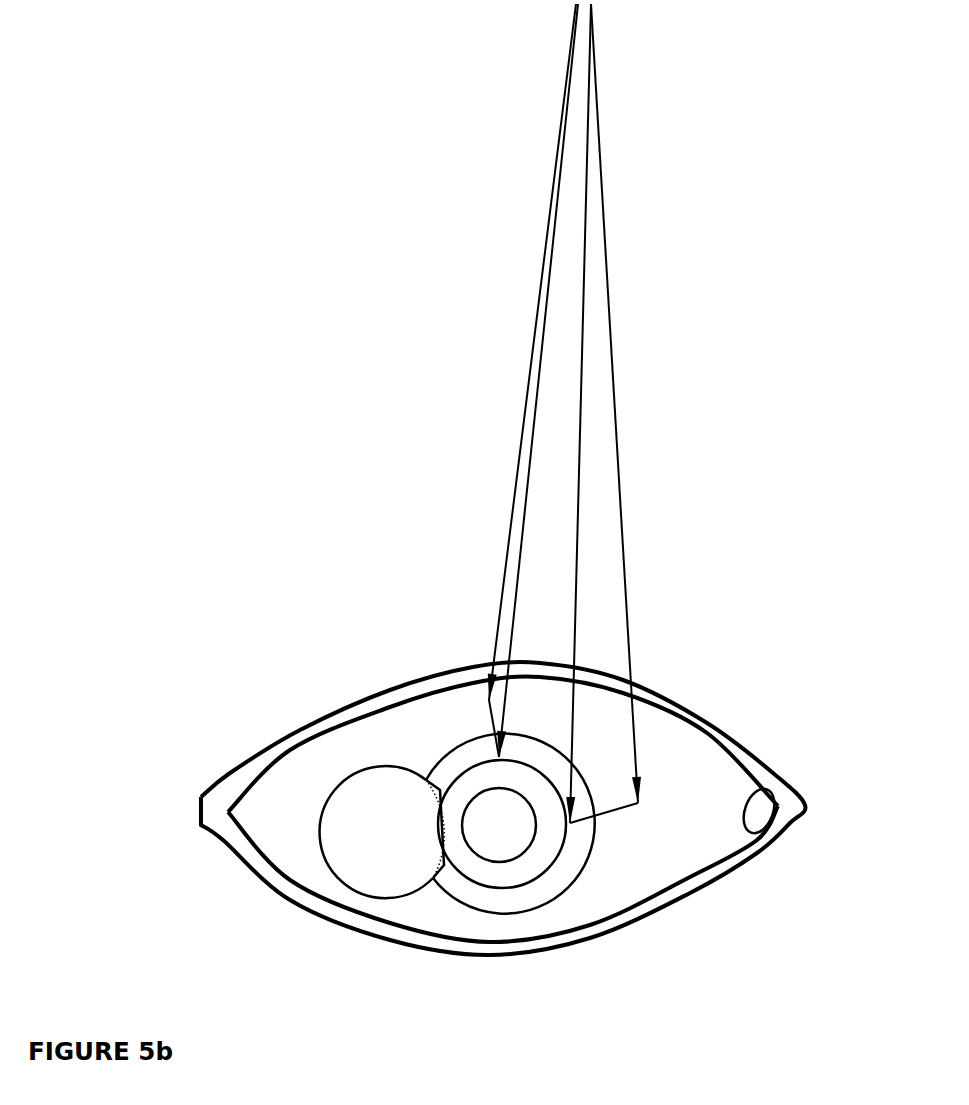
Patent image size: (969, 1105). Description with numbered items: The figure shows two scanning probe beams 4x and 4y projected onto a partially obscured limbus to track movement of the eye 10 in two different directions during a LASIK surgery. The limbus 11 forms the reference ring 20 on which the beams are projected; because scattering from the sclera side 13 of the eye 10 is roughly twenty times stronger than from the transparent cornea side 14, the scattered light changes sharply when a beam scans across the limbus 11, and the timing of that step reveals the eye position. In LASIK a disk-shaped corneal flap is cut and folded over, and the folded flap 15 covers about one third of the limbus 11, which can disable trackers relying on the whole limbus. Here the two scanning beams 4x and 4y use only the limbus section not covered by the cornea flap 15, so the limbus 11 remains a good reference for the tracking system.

The eye 10 is at (784, 696).
The limbus 11 is at (438, 888).
The sclera side 13 is at (607, 853).
The cornea side 14 is at (523, 873).
The folded flap 15 is at (348, 873).
The reference ring 20 is at (448, 750).
The scanning probe beam 4x is at (591, 237).
The scanning probe beam 4y is at (540, 363).